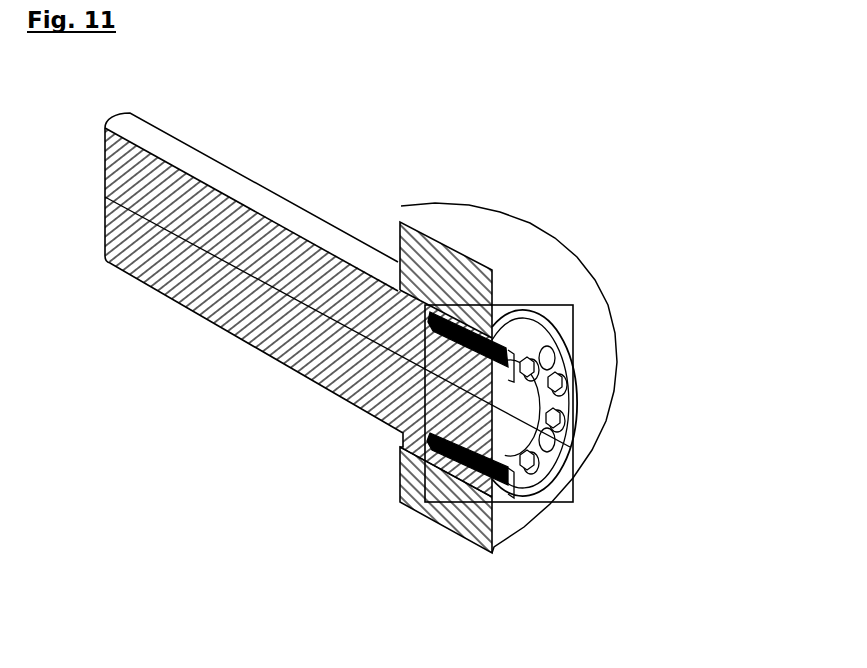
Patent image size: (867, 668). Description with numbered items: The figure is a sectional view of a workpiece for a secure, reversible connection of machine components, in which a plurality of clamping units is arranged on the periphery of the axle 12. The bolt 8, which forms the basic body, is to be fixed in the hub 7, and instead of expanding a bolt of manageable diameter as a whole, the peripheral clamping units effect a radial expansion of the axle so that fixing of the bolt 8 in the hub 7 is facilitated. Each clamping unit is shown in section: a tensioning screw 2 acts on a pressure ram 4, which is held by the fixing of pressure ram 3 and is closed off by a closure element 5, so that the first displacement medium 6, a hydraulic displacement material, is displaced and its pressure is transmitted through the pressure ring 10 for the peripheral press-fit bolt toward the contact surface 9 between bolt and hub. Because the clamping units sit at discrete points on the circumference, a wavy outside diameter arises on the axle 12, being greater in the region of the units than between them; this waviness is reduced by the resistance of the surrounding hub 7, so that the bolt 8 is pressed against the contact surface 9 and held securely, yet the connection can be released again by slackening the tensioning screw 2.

The tensioning screw 2 is at (535, 462).
The fixing of pressure ram 3 is at (577, 337).
The pressure ram 4 is at (493, 306).
The closure element 5 is at (514, 308).
The first displacement medium 6 is at (448, 308).
The hub 7 is at (437, 253).
The bolt 8 is at (331, 272).
The contact surface 9 is at (472, 474).
The pressure ring for peripheral press-fit bolt 10 is at (566, 306).
The axle with a number of clamping units 12 is at (575, 505).